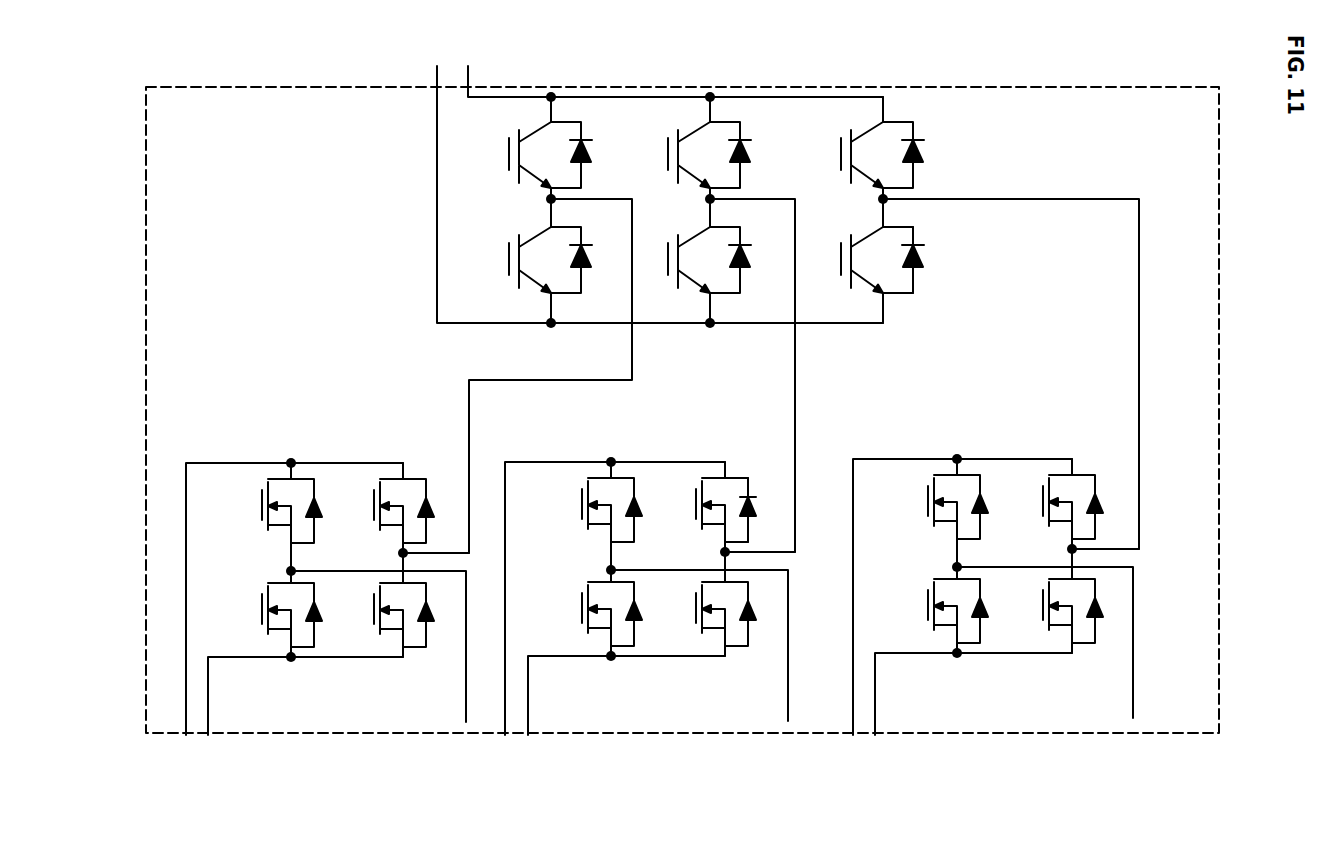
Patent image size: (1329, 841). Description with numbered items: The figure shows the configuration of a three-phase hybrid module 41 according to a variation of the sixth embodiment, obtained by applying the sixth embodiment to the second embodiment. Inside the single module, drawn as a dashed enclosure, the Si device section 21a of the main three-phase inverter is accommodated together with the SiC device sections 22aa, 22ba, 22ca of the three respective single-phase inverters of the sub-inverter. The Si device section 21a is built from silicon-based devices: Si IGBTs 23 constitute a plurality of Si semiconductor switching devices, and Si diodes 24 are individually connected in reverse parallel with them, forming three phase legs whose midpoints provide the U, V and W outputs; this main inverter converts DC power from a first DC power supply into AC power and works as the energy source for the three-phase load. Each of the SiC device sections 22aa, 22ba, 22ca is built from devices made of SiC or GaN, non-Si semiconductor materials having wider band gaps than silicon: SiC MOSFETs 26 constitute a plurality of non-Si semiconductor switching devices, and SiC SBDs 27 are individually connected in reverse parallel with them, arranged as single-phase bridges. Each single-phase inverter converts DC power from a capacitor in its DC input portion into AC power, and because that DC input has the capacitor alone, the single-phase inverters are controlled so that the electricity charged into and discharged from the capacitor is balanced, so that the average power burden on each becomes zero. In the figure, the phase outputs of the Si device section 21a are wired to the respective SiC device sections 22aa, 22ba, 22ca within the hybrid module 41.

The Si device section 21a is at (640, 224).
The SiC device section 22aa is at (327, 668).
The SiC device section 22ba is at (670, 587).
The SiC device section 22ca is at (1023, 670).
The Si IGBT 23 is at (866, 292).
The Si diode 24 is at (922, 274).
The SiC MOSFET 26 is at (765, 476).
The SiC SBD 27 is at (765, 503).
The three-phase hybrid module 41 is at (993, 87).